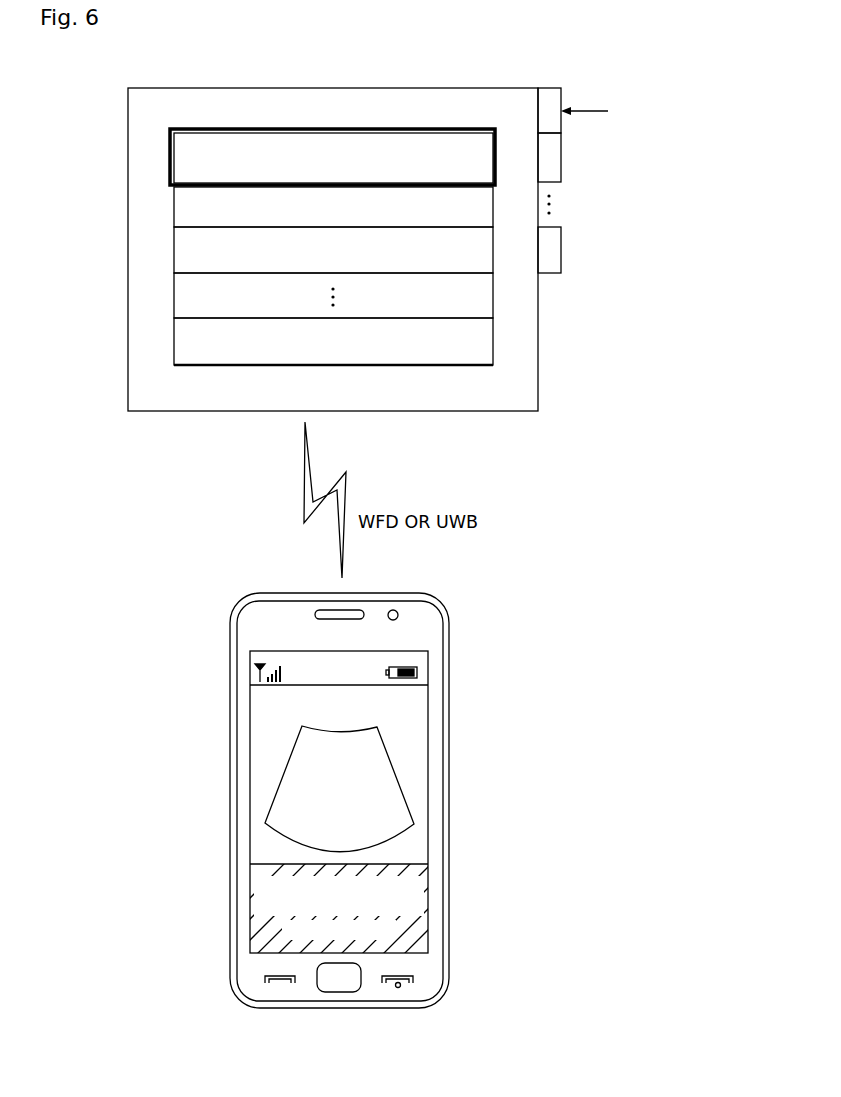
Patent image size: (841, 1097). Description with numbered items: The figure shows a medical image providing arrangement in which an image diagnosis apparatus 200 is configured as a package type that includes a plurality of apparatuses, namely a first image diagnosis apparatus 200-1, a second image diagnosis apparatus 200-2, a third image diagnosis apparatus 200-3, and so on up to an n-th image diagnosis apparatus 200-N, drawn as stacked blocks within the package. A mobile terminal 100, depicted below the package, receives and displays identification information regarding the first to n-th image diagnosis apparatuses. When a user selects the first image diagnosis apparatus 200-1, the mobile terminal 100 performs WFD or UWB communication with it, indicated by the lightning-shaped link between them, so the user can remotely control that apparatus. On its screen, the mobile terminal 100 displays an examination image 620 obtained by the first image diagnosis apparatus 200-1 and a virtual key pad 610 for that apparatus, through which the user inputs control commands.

The image diagnosis apparatus 200 is at (333, 88).
The first image diagnosis apparatus 200-1 is at (186, 157).
The second image diagnosis apparatus 200-2 is at (184, 207).
The third image diagnosis apparatus 200-3 is at (186, 253).
The n-th image diagnosis apparatus 200-N is at (184, 341).
The mobile terminal 100 is at (449, 685).
The examination image 620 is at (398, 782).
The virtual key pad 610 is at (407, 927).